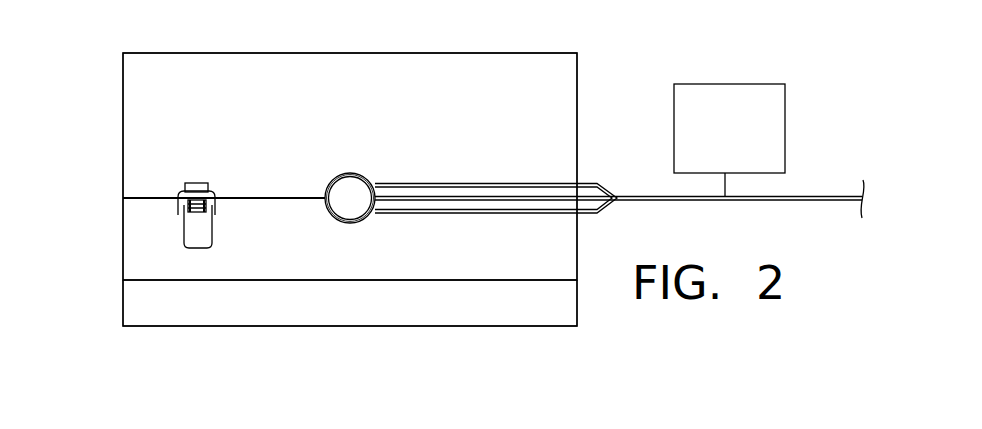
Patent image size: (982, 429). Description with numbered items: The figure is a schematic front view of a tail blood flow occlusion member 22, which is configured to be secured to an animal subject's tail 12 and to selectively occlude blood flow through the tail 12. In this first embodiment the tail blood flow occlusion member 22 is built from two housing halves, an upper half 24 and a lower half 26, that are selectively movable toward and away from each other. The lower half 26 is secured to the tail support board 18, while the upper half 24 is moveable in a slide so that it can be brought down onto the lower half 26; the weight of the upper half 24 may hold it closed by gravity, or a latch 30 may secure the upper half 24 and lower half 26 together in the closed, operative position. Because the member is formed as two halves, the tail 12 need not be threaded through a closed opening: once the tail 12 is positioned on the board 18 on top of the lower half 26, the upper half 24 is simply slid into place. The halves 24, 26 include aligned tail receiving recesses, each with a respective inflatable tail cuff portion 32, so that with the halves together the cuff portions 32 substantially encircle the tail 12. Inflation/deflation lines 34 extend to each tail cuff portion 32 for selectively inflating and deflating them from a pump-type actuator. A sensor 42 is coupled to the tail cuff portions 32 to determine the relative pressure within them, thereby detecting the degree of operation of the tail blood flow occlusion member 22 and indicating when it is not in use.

The tail blood flow occlusion member 22 is at (608, 37).
The upper half 24 is at (394, 113).
The lower half 26 is at (428, 271).
The tail support board 18 is at (480, 318).
The tail 12 is at (363, 209).
The inflatable tail cuff portion 32 is at (335, 172).
The inflation/deflation lines 34 is at (523, 183).
The sensor 42 is at (767, 128).
The latch 30 is at (198, 235).